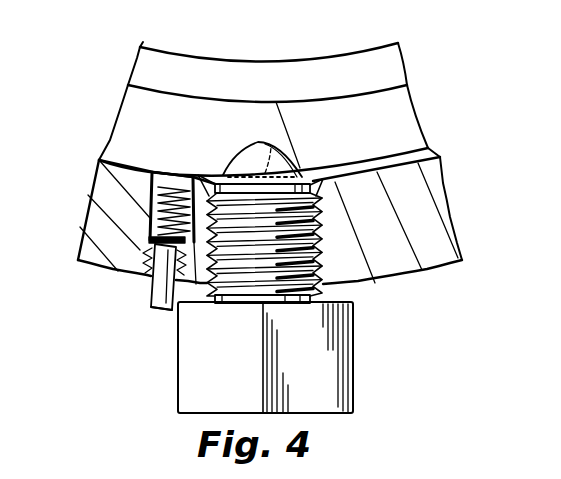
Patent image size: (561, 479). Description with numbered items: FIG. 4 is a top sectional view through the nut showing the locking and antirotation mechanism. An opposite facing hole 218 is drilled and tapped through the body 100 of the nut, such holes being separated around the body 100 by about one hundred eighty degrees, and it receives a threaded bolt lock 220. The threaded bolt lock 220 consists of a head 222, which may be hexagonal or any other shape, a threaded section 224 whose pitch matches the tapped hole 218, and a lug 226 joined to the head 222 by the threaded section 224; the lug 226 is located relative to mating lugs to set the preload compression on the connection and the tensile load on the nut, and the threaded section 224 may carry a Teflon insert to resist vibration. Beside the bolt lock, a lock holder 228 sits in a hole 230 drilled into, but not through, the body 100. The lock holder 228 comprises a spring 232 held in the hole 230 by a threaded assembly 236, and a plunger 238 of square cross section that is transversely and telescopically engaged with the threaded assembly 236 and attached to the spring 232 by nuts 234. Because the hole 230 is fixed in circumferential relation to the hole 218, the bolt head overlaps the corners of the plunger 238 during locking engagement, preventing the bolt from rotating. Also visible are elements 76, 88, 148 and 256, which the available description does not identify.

The ring assembly 76 is at (132, 128).
The inner ring 88 is at (380, 113).
The body 100 is at (98, 253).
The outer ring 148 is at (342, 78).
The hole 218 is at (320, 283).
The threaded bolt lock 220 is at (358, 370).
The head 222 is at (245, 395).
The threaded section 224 is at (258, 263).
The lug 226 is at (243, 158).
The lock holder 228 is at (157, 163).
The hole 230 is at (153, 193).
The spring 232 is at (152, 215).
The nuts 234 is at (150, 238).
The threaded assembly 236 is at (153, 265).
The plunger 238 is at (165, 314).
The locating tab 256 is at (277, 141).